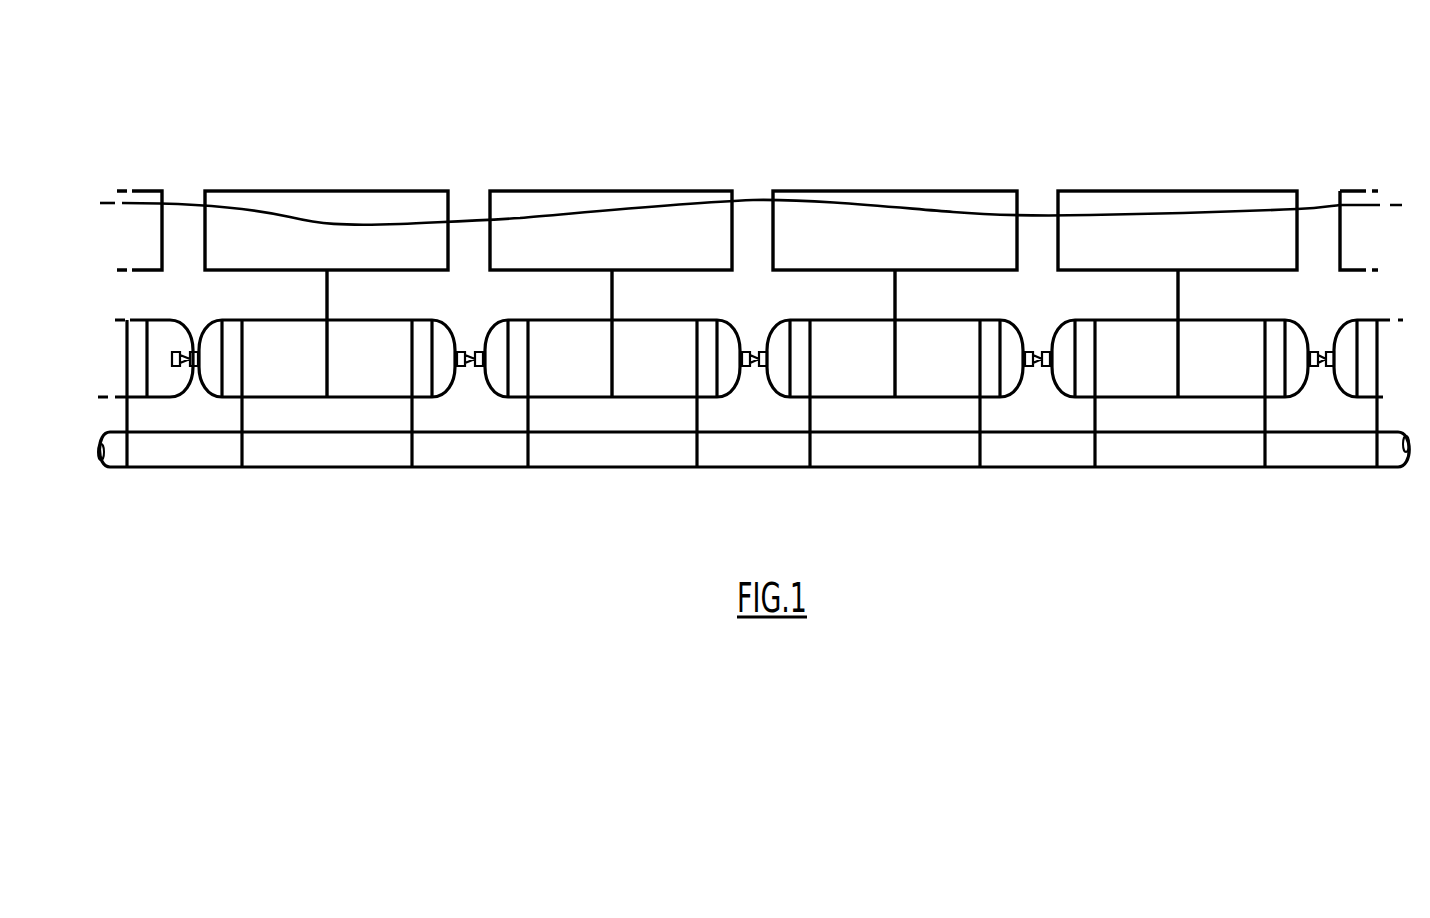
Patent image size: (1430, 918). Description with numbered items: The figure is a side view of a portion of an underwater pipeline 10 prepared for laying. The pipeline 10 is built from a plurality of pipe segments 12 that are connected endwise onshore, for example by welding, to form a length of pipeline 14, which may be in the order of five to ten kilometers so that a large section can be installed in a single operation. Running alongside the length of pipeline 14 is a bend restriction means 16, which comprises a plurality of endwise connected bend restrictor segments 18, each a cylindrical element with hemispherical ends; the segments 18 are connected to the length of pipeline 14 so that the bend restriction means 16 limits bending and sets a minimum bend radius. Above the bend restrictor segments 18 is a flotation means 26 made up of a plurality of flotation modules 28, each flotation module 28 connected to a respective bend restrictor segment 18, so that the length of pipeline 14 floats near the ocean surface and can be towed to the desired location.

The underwater pipeline 10 is at (323, 448).
The pipe segment 12 is at (655, 465).
The length of pipeline 14 is at (1063, 448).
The bend restriction means 16 is at (1290, 402).
The bend restrictor segment 18 is at (1228, 308).
The flotation means 26 is at (650, 127).
The flotation module 28 is at (1123, 205).